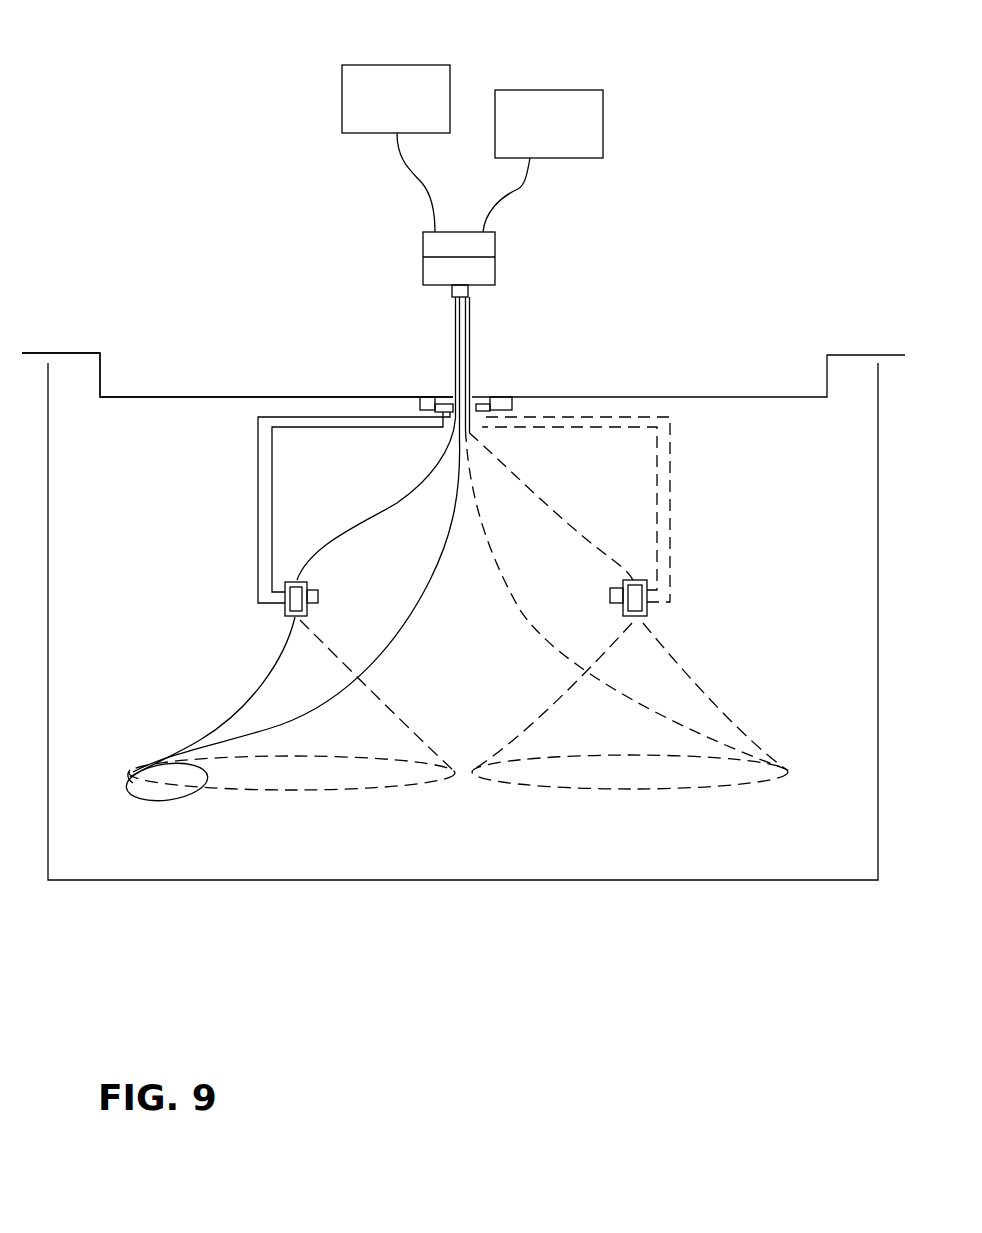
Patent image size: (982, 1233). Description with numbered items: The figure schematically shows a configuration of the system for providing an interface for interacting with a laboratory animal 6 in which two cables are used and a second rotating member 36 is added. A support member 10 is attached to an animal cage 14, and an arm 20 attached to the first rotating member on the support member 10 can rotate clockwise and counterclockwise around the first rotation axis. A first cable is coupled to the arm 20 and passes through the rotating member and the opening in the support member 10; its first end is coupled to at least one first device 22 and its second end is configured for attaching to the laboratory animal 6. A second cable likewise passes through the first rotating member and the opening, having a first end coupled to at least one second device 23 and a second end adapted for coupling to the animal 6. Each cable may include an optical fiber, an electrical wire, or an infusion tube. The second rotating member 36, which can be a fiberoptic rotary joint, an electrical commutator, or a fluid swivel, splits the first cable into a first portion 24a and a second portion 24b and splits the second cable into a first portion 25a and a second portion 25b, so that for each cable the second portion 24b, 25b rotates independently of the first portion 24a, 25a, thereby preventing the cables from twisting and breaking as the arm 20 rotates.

The laboratory animal 6 is at (188, 808).
The support member 10 is at (217, 396).
The animal cage 14 is at (878, 593).
The arm 20 is at (257, 517).
The first device 22 is at (343, 100).
The second device 23 is at (575, 91).
The first portion of the first cable 24a is at (422, 187).
The second portion of the first cable 24b is at (457, 352).
The first portion of the second cable 25a is at (521, 187).
The second portion of the second cable 25b is at (467, 330).
The second rotating member 36 is at (495, 260).